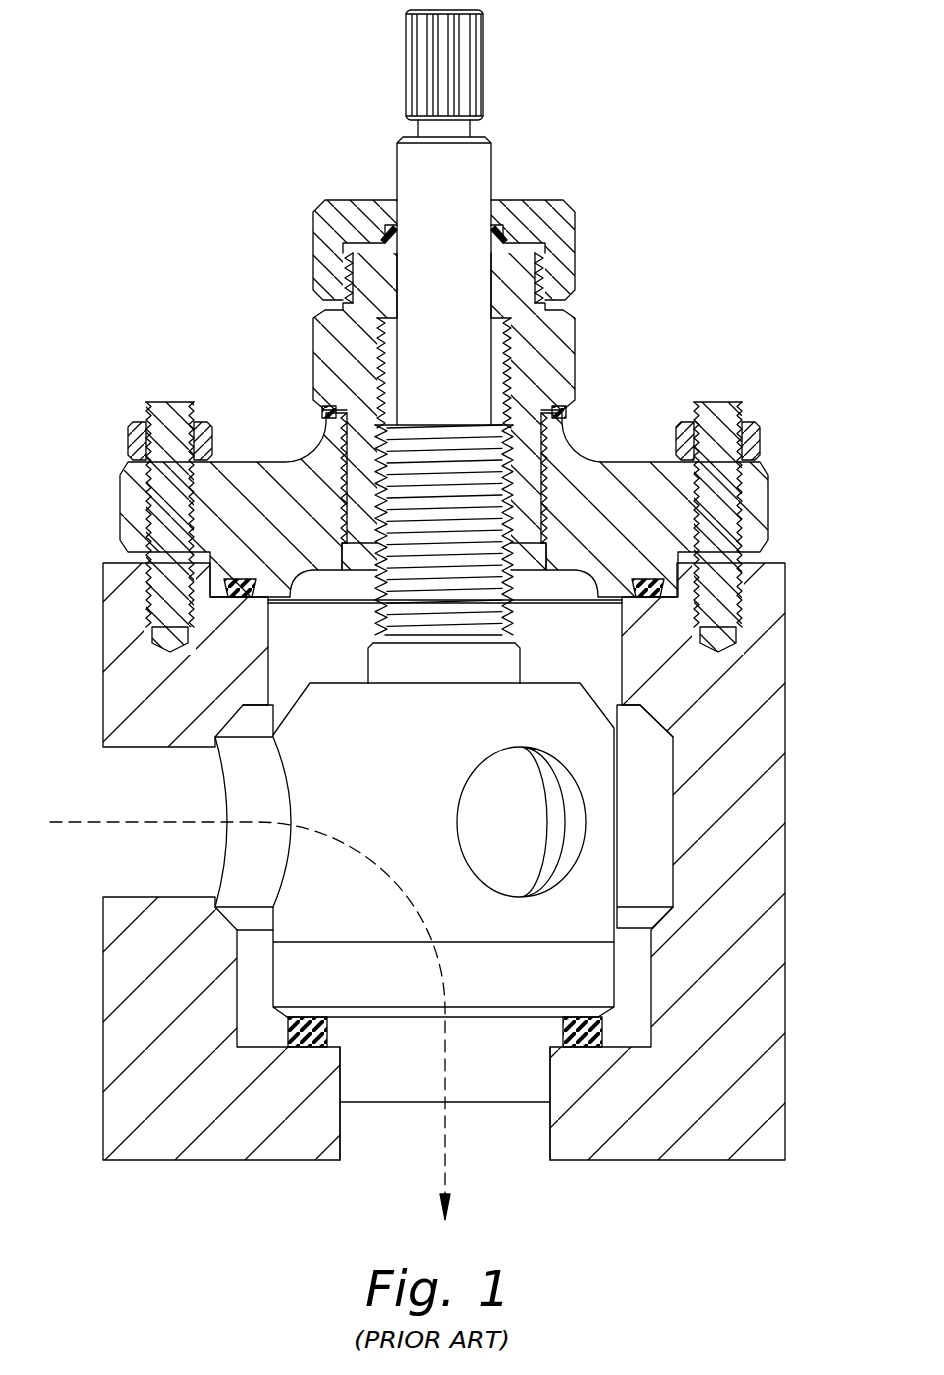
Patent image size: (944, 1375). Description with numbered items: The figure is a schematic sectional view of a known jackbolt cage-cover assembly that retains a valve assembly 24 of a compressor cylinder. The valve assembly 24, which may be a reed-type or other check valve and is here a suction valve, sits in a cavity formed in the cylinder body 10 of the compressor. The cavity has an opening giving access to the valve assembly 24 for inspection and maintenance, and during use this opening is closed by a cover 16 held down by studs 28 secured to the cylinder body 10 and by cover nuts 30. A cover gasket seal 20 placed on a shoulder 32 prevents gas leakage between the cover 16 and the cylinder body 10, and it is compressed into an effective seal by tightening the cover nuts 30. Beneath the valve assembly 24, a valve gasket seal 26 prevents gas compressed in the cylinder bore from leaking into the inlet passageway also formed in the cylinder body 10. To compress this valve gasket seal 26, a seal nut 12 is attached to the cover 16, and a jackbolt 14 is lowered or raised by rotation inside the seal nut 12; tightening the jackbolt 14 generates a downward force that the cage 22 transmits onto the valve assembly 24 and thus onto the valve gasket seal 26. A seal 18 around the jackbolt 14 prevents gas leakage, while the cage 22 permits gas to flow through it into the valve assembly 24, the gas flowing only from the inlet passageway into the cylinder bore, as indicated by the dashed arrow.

The cylinder body 10 is at (786, 793).
The seal nut 12 is at (578, 331).
The jackbolt 14 is at (493, 166).
The cover 16 is at (770, 500).
The seal 18 is at (560, 410).
The cover gasket seal 20 is at (660, 598).
The cage 22 is at (601, 774).
The valve assembly 24 is at (490, 1100).
The valve gasket seal 26 is at (311, 1033).
The studs 28 is at (729, 400).
The cover nuts 30 is at (790, 444).
The shoulder 32 is at (232, 578).